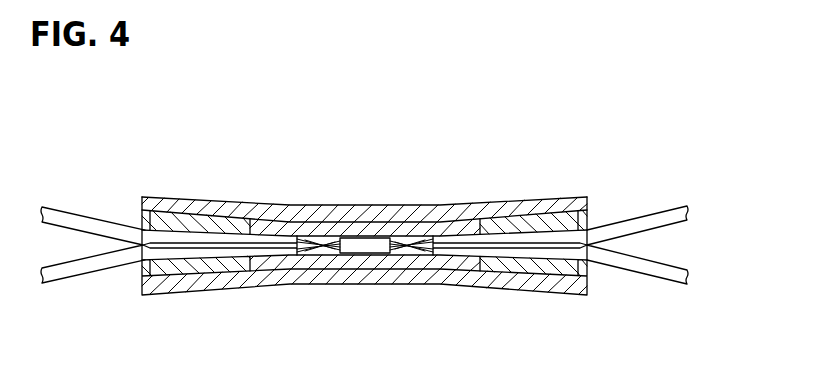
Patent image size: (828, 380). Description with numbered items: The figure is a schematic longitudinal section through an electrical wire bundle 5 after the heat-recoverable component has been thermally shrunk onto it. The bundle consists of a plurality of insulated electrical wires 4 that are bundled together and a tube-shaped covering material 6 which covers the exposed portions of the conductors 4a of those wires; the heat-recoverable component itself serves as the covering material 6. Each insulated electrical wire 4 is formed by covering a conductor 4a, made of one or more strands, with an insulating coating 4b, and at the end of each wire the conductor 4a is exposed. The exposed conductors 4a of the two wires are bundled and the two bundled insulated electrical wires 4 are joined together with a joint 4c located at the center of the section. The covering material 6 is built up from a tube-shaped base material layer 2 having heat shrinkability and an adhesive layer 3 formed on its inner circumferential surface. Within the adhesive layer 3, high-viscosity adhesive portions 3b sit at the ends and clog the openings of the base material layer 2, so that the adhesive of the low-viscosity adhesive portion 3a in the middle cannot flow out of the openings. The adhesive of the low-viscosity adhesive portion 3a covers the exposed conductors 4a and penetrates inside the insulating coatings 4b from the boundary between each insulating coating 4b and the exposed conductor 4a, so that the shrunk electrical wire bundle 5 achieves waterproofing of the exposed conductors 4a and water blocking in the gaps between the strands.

The base material layer 2 is at (157, 297).
The adhesive layer 3 is at (404, 216).
The low-viscosity adhesive portion 3a is at (382, 262).
The high-viscosity adhesive portion 3b is at (207, 276).
The insulated electrical wire 4 is at (73, 212).
The conductor 4a is at (409, 238).
The insulating coating 4b is at (461, 238).
The joint 4c is at (365, 244).
The electrical wire bundle 5 is at (375, 212).
The covering material 6 is at (546, 182).